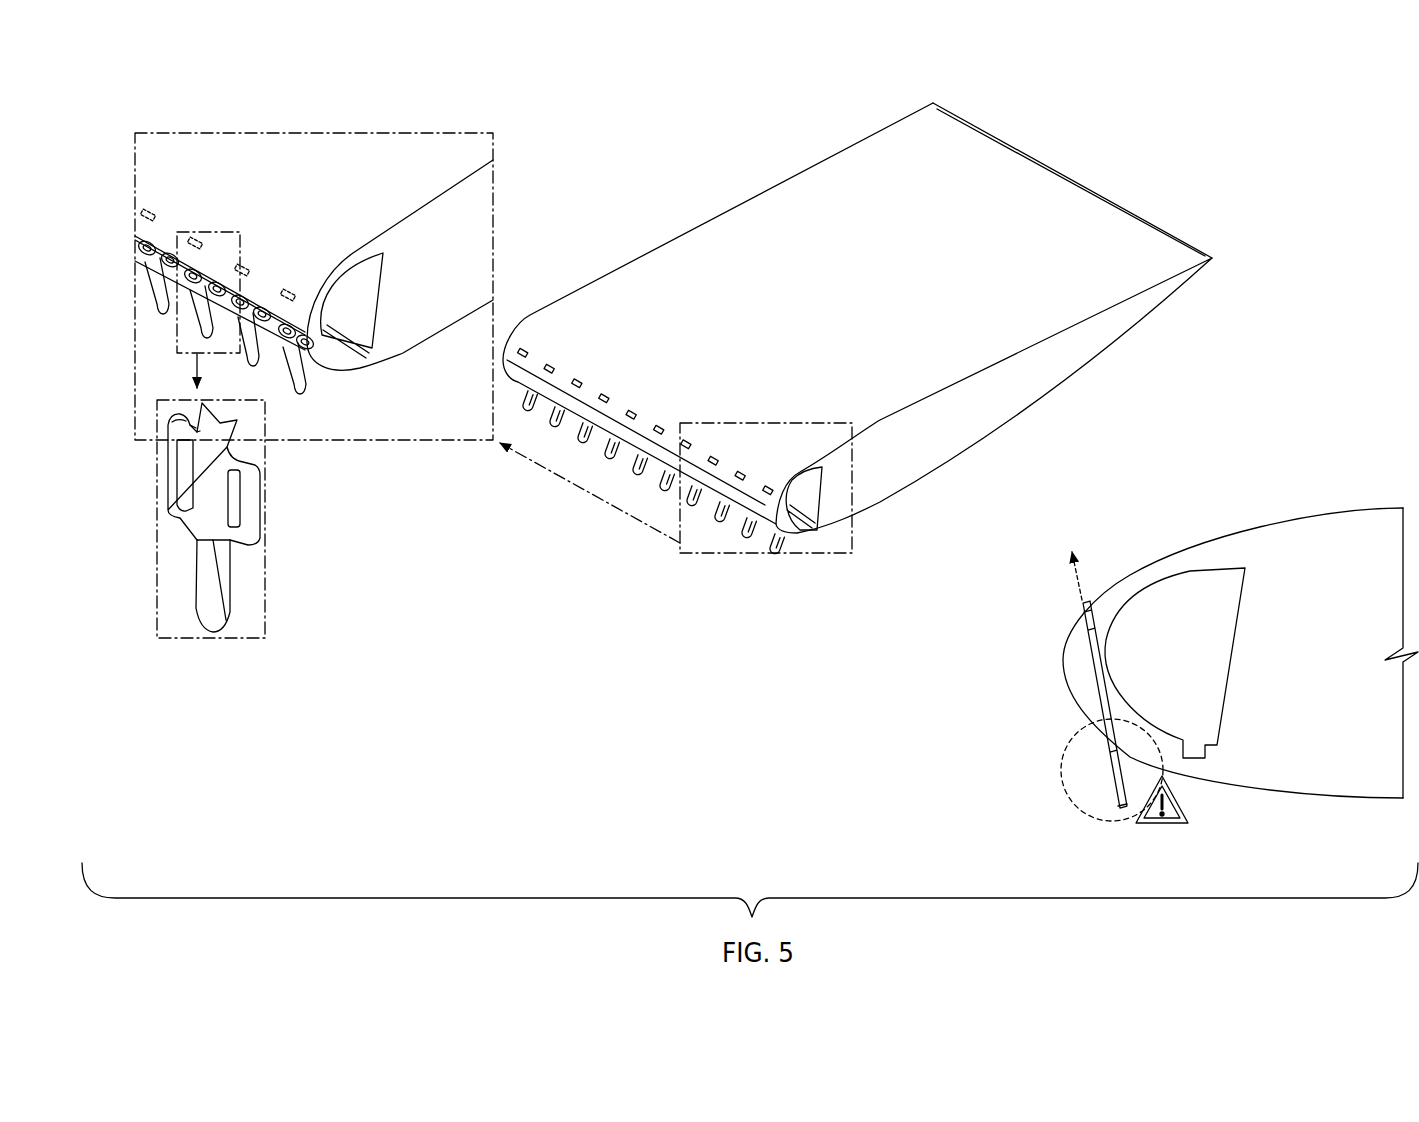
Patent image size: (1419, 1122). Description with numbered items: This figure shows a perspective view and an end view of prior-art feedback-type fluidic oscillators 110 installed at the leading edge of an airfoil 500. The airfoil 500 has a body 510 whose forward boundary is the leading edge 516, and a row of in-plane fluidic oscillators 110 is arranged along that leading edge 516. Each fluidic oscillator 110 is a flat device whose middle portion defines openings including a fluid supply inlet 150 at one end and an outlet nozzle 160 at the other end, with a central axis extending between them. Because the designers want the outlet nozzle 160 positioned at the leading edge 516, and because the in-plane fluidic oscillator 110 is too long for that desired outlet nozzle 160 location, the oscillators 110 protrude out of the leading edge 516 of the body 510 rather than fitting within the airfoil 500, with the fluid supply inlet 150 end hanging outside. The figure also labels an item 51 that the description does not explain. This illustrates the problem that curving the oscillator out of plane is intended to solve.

The airfoil 500 is at (392, 156).
The body 510 is at (324, 178).
The leading edge 516 is at (150, 238).
The outlet nozzle 160 is at (224, 413).
The feedback-type fluidic oscillator 110 is at (173, 549).
The fluid supply inlet 150 is at (234, 637).
The inner lining 51 is at (1350, 587).